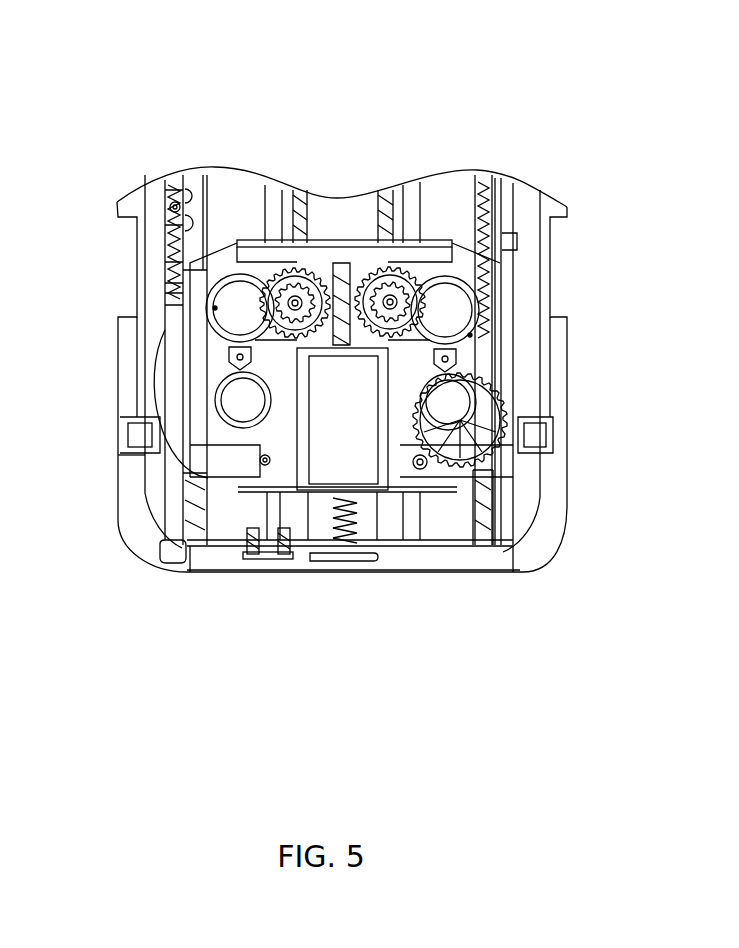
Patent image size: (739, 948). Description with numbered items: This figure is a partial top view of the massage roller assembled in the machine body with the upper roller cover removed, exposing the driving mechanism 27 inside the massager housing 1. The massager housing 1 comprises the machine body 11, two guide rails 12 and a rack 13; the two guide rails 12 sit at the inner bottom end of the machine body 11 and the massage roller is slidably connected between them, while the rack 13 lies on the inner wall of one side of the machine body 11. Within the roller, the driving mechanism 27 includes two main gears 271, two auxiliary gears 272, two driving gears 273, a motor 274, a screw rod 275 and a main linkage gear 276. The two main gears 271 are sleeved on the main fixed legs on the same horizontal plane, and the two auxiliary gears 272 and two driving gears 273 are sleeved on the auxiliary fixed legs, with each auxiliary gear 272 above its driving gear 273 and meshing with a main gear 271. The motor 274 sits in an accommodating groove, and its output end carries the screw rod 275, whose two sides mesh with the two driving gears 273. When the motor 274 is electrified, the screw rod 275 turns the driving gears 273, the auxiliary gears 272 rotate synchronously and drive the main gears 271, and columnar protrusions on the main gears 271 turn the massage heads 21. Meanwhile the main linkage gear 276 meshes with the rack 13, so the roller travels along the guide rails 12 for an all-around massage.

The massager housing 1 is at (158, 52).
The machine body 11 is at (160, 172).
The guide rail 12 is at (300, 192).
The rack 13 is at (485, 210).
The massage head 21 is at (213, 308).
The driving mechanism 27 is at (155, 658).
The main gear 271 is at (208, 478).
The auxiliary gear 272 is at (410, 440).
The driving gear 273 is at (262, 545).
The motor 274 is at (341, 548).
The screw rod 275 is at (316, 562).
The main linkage gear 276 is at (470, 465).